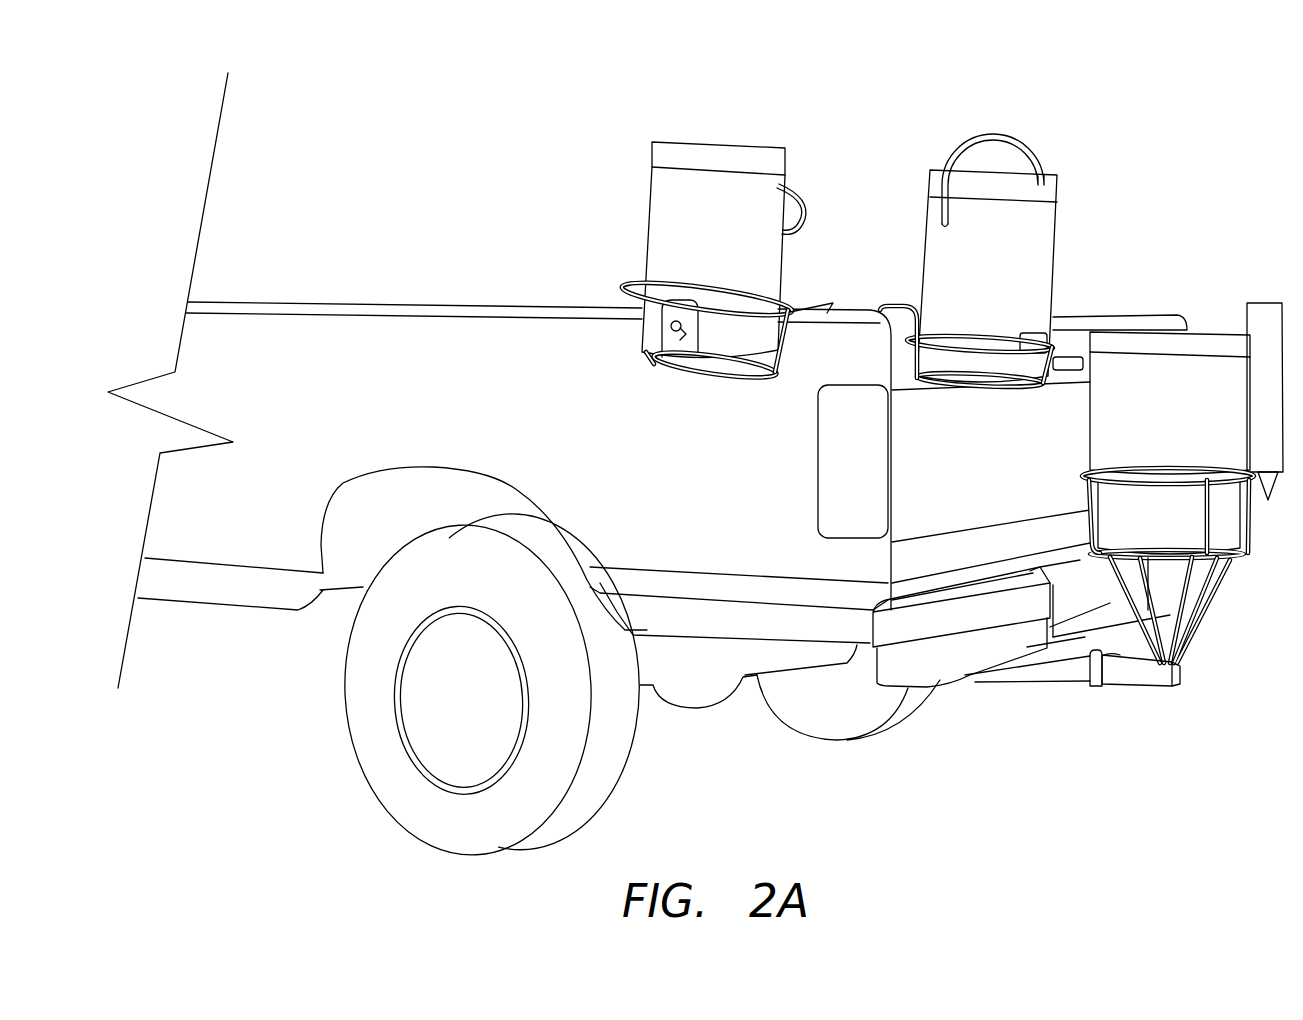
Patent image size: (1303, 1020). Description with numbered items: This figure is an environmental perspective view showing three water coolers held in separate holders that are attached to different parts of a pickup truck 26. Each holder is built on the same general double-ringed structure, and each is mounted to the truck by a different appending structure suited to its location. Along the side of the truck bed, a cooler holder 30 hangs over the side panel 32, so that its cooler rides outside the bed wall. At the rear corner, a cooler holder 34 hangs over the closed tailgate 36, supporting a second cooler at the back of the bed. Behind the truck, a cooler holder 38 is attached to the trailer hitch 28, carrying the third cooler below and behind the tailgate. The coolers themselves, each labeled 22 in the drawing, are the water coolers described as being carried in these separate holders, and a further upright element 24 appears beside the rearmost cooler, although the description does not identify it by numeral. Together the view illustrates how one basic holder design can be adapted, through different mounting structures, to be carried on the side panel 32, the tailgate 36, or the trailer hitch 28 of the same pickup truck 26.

The cooler 22 is at (688, 245).
The post 24 is at (1262, 312).
The pickup truck 26 is at (432, 143).
The trailer hitch 28 is at (1060, 673).
The cooler holder 30 is at (607, 252).
The side panel 32 is at (538, 417).
The cooler holder 34 is at (890, 283).
The tailgate 36 is at (975, 457).
The cooler holder 38 is at (1225, 628).